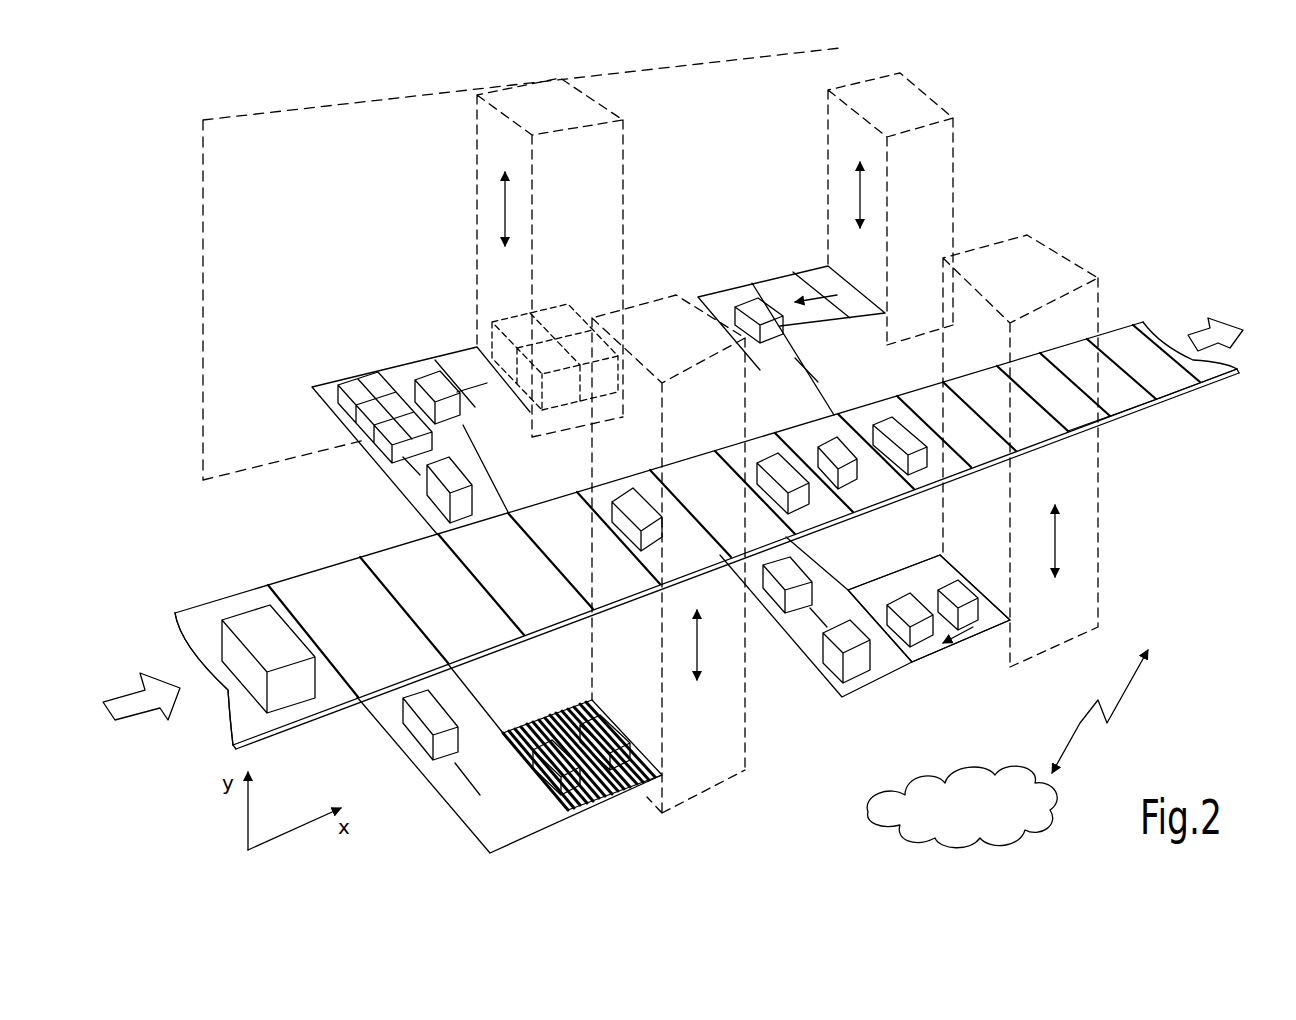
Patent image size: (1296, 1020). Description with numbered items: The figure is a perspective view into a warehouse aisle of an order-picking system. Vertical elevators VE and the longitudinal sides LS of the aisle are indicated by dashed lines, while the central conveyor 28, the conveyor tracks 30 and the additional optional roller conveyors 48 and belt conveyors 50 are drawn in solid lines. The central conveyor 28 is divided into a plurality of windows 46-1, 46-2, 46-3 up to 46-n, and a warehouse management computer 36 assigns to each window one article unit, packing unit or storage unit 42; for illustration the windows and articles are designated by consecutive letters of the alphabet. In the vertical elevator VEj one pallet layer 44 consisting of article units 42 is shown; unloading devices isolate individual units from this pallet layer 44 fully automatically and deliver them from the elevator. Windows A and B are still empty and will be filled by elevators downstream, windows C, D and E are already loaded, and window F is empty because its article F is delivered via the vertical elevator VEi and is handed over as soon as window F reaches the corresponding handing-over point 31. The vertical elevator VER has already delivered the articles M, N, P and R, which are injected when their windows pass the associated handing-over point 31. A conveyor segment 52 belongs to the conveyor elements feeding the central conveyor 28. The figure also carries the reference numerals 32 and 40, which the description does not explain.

The central conveyor 28 is at (1113, 325).
The conveyor track 30 is at (384, 471).
The handing-over point 31 is at (337, 612).
The transport direction arrow 32 is at (143, 708).
The warehouse management computer 36 is at (955, 824).
The communication link 40 is at (1090, 724).
The article and packing units 42 is at (750, 308).
The pallet layer 44 is at (512, 300).
The window 46-1 is at (1183, 393).
The window 46-2 is at (1133, 410).
The window 46-3 is at (1103, 445).
The window 46-n is at (218, 597).
The roller conveyor 48 is at (595, 812).
The belt conveyor 50 is at (975, 638).
The conveyor segment 52 is at (783, 294).
The longitudinal side LS is at (245, 163).
The vertical elevator VE is at (706, 793).
The vertical elevator VEj is at (623, 157).
The vertical elevator VEi is at (953, 148).
The vertical elevator VER is at (1100, 608).